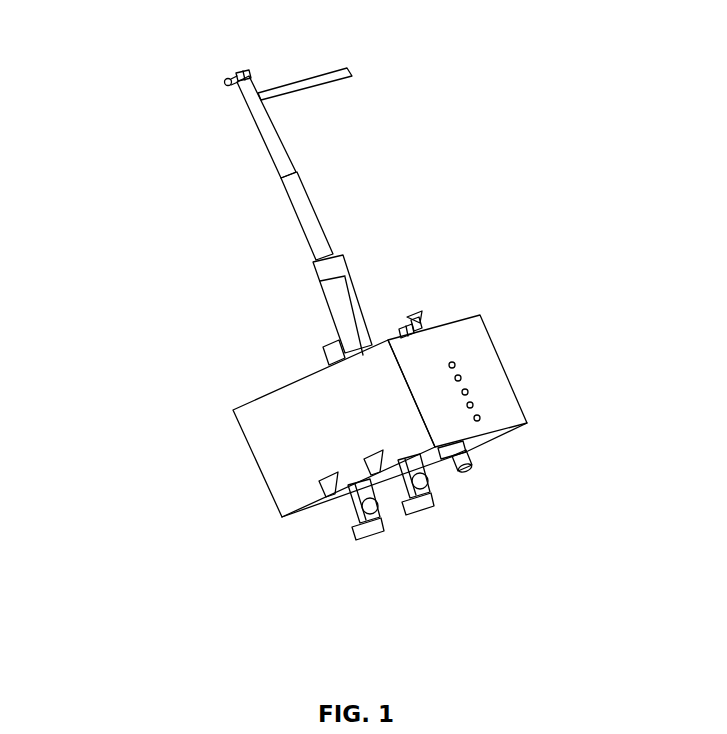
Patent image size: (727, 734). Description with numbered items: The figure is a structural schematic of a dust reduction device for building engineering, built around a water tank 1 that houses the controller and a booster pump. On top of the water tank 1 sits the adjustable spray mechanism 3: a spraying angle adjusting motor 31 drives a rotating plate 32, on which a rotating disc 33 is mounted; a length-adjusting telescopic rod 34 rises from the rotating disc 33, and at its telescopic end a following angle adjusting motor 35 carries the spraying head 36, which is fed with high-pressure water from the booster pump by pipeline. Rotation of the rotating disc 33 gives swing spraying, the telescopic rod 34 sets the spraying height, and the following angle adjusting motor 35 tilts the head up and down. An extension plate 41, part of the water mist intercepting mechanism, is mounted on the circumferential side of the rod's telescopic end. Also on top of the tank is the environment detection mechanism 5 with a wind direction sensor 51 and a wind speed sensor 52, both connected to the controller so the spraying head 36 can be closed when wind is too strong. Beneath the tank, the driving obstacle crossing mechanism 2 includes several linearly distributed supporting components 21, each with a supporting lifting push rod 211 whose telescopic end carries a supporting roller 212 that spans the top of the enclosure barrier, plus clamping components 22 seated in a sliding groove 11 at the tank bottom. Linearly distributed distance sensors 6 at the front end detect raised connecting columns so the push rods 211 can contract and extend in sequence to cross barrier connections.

The water tank 1 is at (326, 414).
The sliding groove 11 is at (266, 476).
The driving obstacle crossing mechanism 2 is at (457, 523).
The supporting component 21 is at (520, 490).
The clamping component 22 is at (500, 525).
The supporting lifting push rod 211 is at (426, 538).
The supporting roller 212 is at (314, 561).
The adjustable spray mechanism 3 is at (211, 192).
The spraying angle adjusting motor 31 is at (231, 307).
The rotating plate 32 is at (242, 277).
The rotating disc 33 is at (222, 209).
The length-adjusting telescopic rod 34 is at (204, 133).
The following angle adjusting motor 35 is at (178, 50).
The spraying head 36 is at (171, 77).
The extension plate 41 is at (340, 52).
The environment detection mechanism 5 is at (498, 250).
The wind direction sensor 51 is at (465, 233).
The wind speed sensor 52 is at (447, 285).
The distance sensor 6 is at (523, 391).